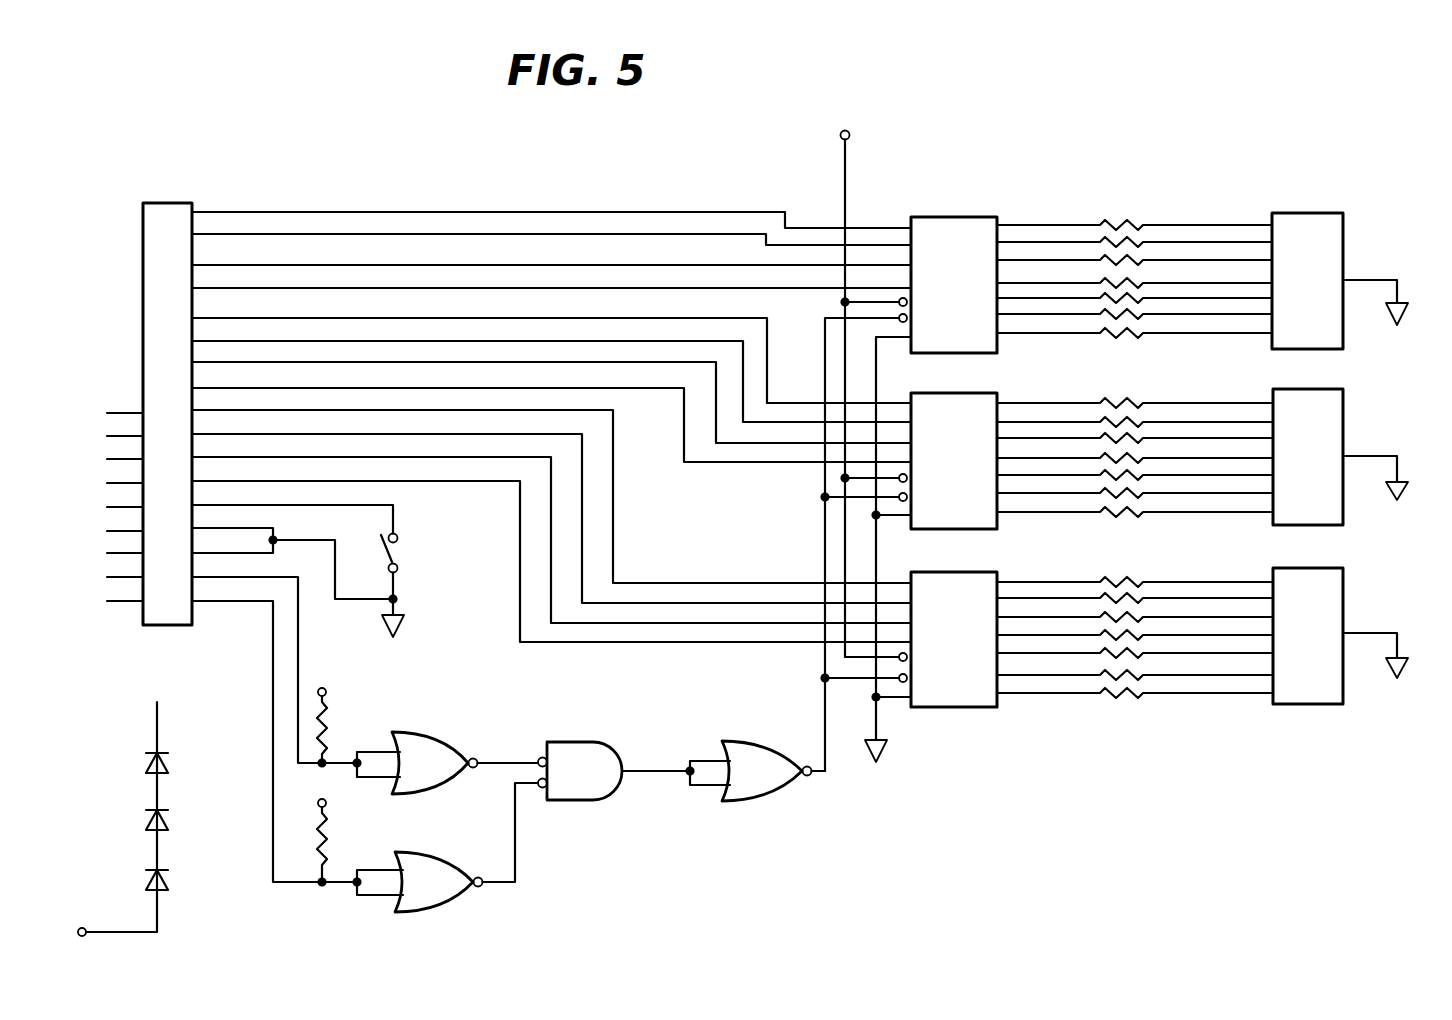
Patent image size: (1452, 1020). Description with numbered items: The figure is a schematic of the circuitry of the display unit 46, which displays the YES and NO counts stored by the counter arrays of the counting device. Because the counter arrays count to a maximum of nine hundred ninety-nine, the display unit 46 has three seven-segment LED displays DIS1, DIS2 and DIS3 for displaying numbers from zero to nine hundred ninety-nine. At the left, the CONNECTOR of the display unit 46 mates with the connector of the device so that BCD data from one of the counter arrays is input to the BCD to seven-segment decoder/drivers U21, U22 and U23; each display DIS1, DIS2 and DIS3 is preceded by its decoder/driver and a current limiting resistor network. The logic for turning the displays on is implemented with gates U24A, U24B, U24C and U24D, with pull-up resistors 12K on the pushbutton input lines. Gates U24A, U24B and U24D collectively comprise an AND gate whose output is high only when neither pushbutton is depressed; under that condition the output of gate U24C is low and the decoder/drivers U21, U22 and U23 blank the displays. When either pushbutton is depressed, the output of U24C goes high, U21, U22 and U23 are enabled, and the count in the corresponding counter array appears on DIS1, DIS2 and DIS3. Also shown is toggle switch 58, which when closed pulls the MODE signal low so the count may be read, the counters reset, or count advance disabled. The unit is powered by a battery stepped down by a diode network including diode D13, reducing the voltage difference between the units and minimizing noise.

The display unit 46 is at (582, 204).
The toggle switch 58 is at (397, 549).
The connector CONNECTOR is at (167, 393).
The decoder/driver U21 is at (960, 222).
The decoder/driver U22 is at (963, 405).
The decoder/driver U23 is at (975, 563).
The 7-segment LED display DIS1 is at (1315, 195).
The 7-segment LED display DIS2 is at (1318, 382).
The 7-segment LED display DIS3 is at (1330, 560).
The 12K pull-up resistors 12K is at (326, 836).
The gate U24A is at (447, 723).
The gate U24B is at (455, 842).
The gate U24C is at (772, 728).
The gate U24D is at (607, 733).
The diode D13 is at (164, 763).